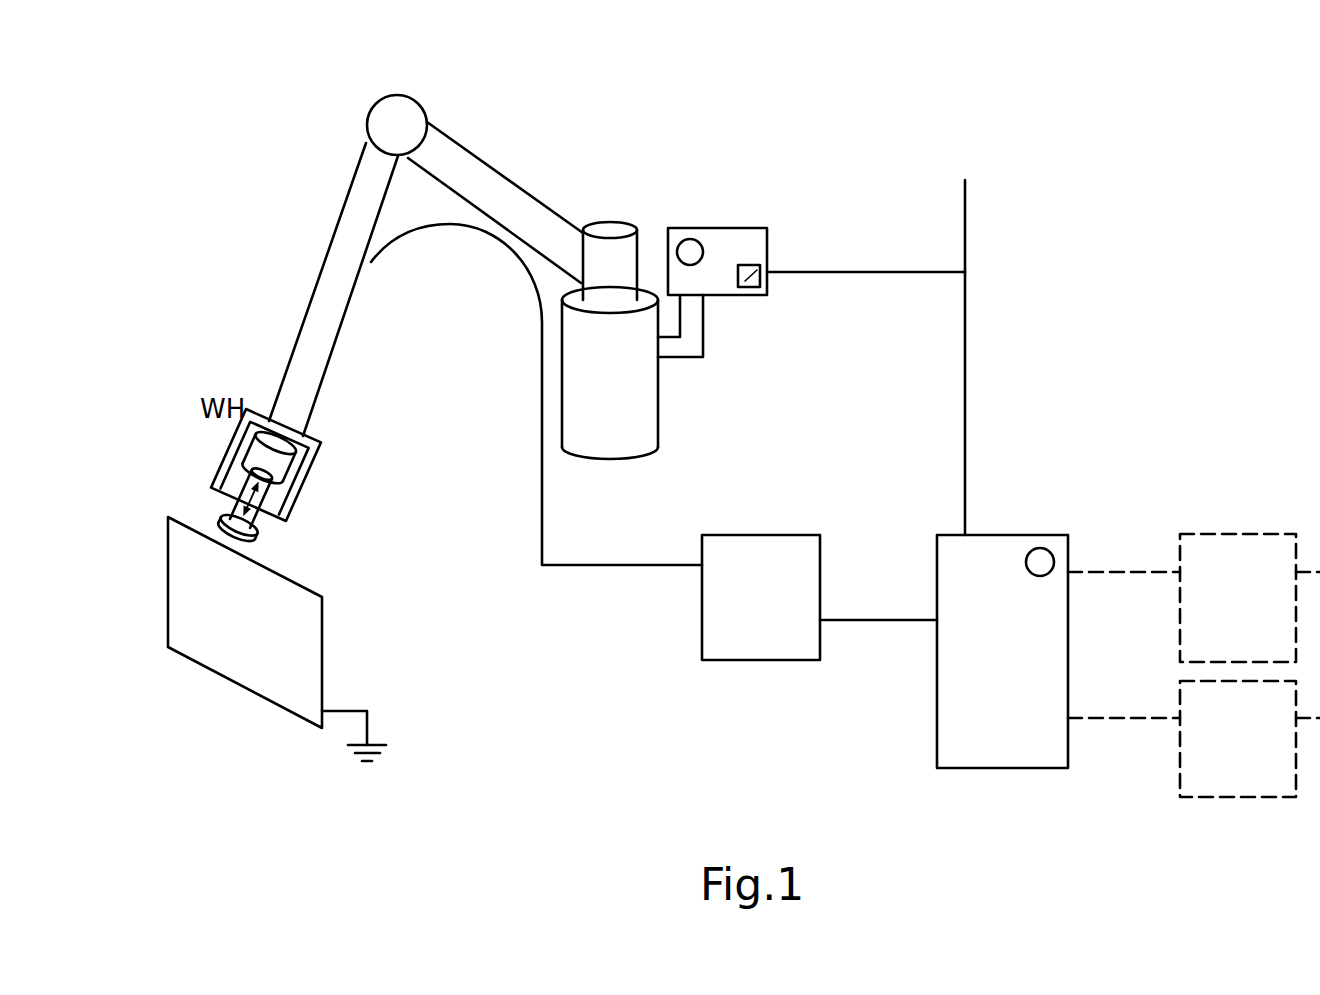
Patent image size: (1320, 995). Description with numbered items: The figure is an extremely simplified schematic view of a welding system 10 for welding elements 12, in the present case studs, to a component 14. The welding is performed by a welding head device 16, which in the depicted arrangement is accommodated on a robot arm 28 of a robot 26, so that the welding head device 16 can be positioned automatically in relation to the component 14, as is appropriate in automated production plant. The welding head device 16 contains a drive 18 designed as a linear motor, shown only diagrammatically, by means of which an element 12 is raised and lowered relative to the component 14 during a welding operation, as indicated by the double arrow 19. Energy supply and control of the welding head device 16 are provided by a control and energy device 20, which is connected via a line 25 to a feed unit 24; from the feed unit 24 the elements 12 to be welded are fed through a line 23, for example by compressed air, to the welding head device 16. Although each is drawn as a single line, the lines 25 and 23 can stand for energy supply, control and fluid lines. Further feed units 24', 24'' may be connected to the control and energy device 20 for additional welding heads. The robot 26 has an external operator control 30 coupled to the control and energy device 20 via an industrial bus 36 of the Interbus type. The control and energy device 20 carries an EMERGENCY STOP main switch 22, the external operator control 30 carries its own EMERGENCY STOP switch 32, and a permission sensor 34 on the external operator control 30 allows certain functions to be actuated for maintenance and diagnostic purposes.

The welding system 10 is at (236, 303).
The elements 12 is at (255, 530).
The component 14 is at (297, 627).
The welding head device 16 is at (300, 463).
The drive 18 is at (278, 473).
The double arrow 19 is at (235, 513).
The control and energy device 20 is at (985, 553).
The main switch 22 is at (1050, 556).
The line 23 is at (580, 567).
The feed unit 24 is at (761, 671).
The further feed unit 24' is at (1194, 536).
The further feed unit 24'' is at (1194, 789).
The line 25 is at (880, 622).
The robot 26 is at (637, 402).
The robot arm 28 is at (345, 253).
The external operator control 30 is at (727, 247).
The EMERGENCY STOP switch 32 is at (690, 250).
The permission sensor 34 is at (768, 263).
The industrial bus 36 is at (967, 317).